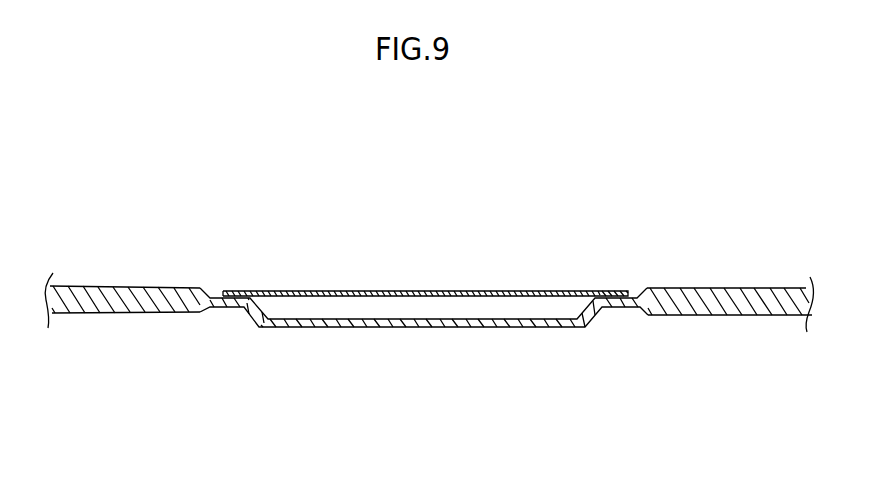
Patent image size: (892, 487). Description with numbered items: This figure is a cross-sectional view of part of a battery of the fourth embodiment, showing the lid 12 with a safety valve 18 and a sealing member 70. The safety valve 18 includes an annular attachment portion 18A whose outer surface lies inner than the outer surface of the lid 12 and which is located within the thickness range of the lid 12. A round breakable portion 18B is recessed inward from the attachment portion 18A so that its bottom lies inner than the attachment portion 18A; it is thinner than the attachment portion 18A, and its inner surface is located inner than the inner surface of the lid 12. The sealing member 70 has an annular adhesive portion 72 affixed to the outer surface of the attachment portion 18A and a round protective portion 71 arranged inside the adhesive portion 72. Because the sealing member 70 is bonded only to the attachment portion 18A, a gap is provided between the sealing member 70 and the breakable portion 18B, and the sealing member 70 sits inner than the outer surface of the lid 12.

The lid 12 is at (725, 303).
The safety valve 18 is at (351, 364).
The attachment portion 18A is at (615, 305).
The breakable portion 18B is at (418, 327).
The sealing member 70 is at (430, 232).
The protective portion 71 is at (507, 290).
The adhesive portion 72 is at (615, 290).